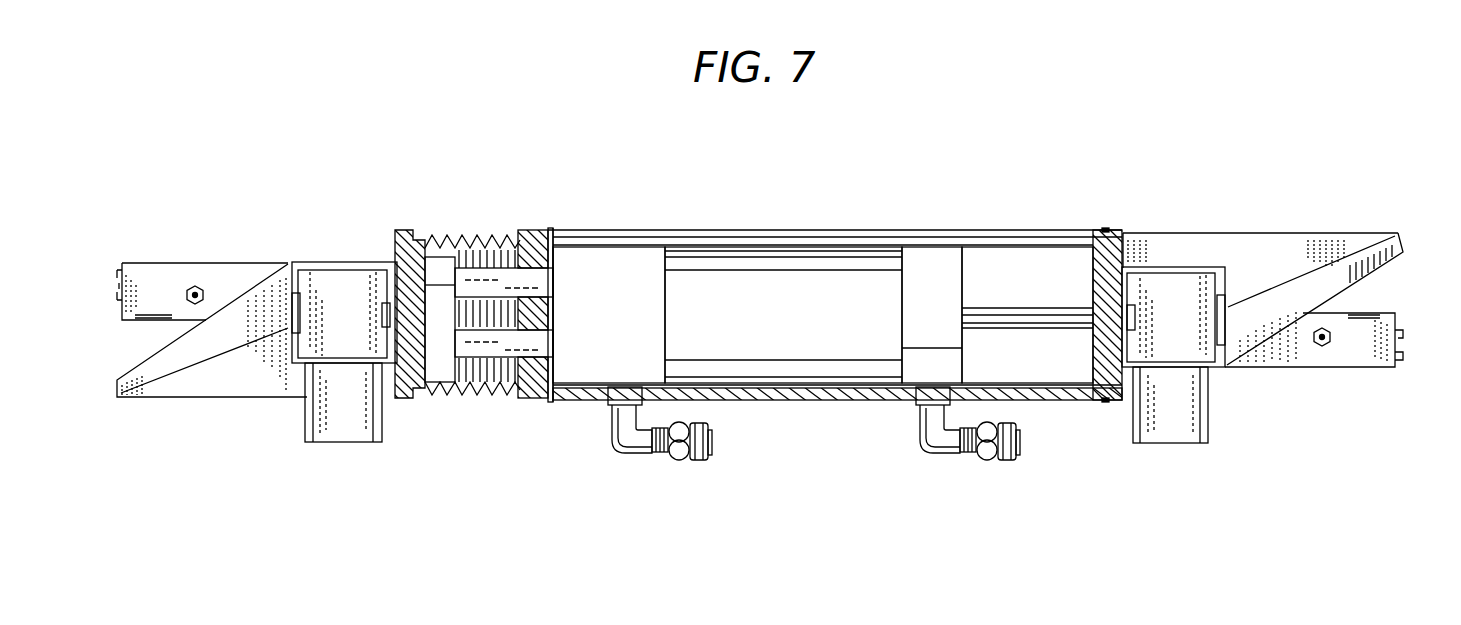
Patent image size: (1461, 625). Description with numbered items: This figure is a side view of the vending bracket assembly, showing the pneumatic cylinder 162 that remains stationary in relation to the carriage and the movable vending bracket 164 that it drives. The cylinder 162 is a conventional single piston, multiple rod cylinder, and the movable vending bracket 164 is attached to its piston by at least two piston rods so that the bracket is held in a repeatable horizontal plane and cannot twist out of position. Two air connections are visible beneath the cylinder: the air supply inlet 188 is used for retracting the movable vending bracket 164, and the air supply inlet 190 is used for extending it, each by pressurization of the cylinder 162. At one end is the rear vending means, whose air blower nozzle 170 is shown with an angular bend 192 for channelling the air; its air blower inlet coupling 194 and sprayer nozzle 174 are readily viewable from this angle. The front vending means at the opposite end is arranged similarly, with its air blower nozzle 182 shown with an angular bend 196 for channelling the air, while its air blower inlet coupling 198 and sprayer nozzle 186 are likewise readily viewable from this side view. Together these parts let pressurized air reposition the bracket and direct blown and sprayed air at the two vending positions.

The cylinder housing 162 is at (817, 367).
The movable vending bracket 164 is at (400, 402).
The air blower nozzle 170 is at (215, 325).
The sprayer nozzle 174 is at (177, 232).
The air blower nozzle 182 is at (1283, 324).
The sprayer nozzle 186 is at (1369, 387).
The air supply inlet 188 is at (643, 450).
The air supply inlet 190 is at (947, 458).
The angular bend 192 is at (217, 340).
The air blower inlet coupling 194 is at (340, 443).
The angular bend 196 is at (1362, 275).
The air blower inlet coupling 198 is at (1190, 430).